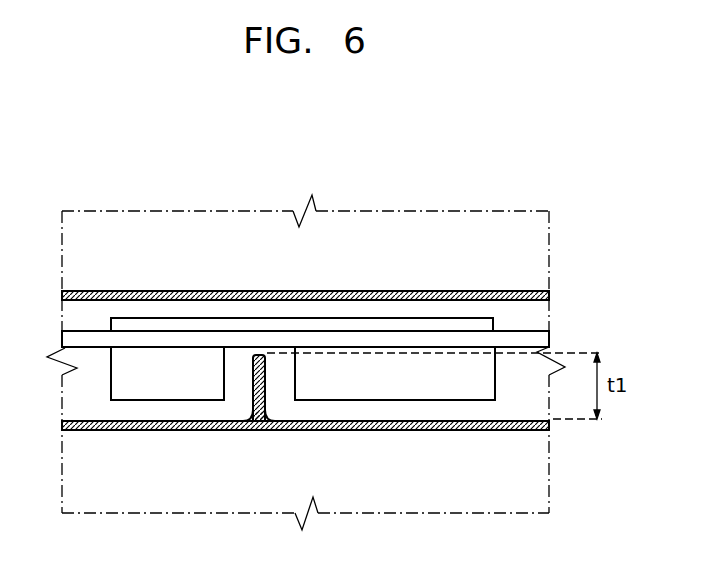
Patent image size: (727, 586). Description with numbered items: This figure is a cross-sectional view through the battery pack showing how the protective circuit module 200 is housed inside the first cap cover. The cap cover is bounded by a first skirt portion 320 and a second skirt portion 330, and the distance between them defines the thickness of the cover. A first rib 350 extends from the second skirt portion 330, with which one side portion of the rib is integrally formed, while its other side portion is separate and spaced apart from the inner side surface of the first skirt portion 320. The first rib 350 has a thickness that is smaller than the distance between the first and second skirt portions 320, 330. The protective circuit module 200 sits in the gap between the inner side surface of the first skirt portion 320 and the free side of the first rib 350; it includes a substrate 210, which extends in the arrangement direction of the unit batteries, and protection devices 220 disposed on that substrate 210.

The protective circuit module 200 is at (372, 316).
The substrate 210 is at (537, 342).
The protection devices 220 is at (483, 325).
The first skirt portion 320 is at (400, 290).
The second skirt portion 330 is at (390, 432).
The first rib 350 is at (257, 382).